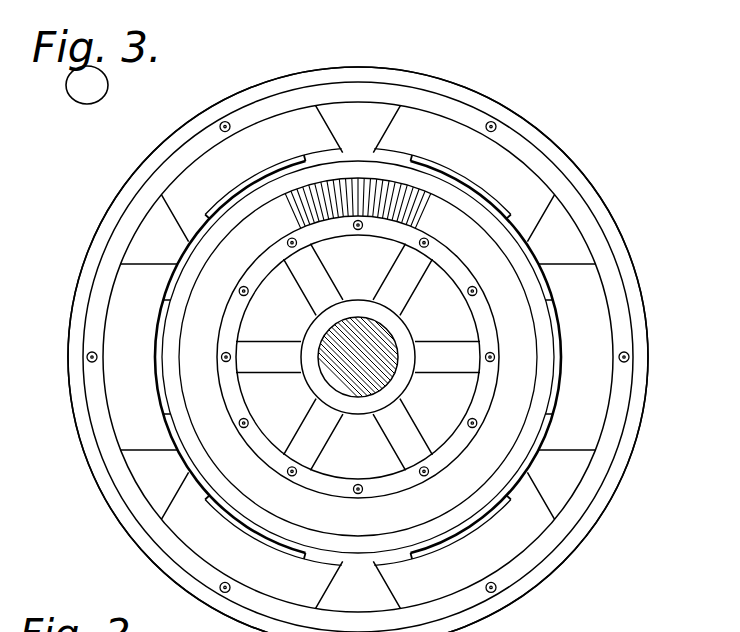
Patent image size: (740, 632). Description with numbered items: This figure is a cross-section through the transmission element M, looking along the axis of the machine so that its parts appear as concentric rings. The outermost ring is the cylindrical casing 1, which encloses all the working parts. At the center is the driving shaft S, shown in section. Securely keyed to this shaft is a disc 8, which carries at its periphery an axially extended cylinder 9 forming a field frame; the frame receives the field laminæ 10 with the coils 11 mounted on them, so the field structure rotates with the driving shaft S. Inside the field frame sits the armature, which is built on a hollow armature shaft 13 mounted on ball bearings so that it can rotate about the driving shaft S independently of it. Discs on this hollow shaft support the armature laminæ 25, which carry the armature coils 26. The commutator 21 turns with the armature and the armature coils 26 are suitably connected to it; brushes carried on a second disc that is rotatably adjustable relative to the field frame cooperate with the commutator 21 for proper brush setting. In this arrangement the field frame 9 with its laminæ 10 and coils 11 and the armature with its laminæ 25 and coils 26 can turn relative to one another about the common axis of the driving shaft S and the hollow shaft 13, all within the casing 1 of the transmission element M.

The cylindrical casing 1 is at (500, 610).
The disc 8 is at (565, 477).
The cylinder (field frame) 9 is at (557, 537).
The laminæ 10 is at (495, 188).
The coils 11 is at (533, 205).
The hollow armature shaft 13 is at (317, 382).
The commutator 21 is at (502, 298).
The armature laminæ 25 is at (380, 167).
The armature coils 26 is at (198, 252).
The transmission element M is at (642, 290).
The driving shaft S is at (373, 373).